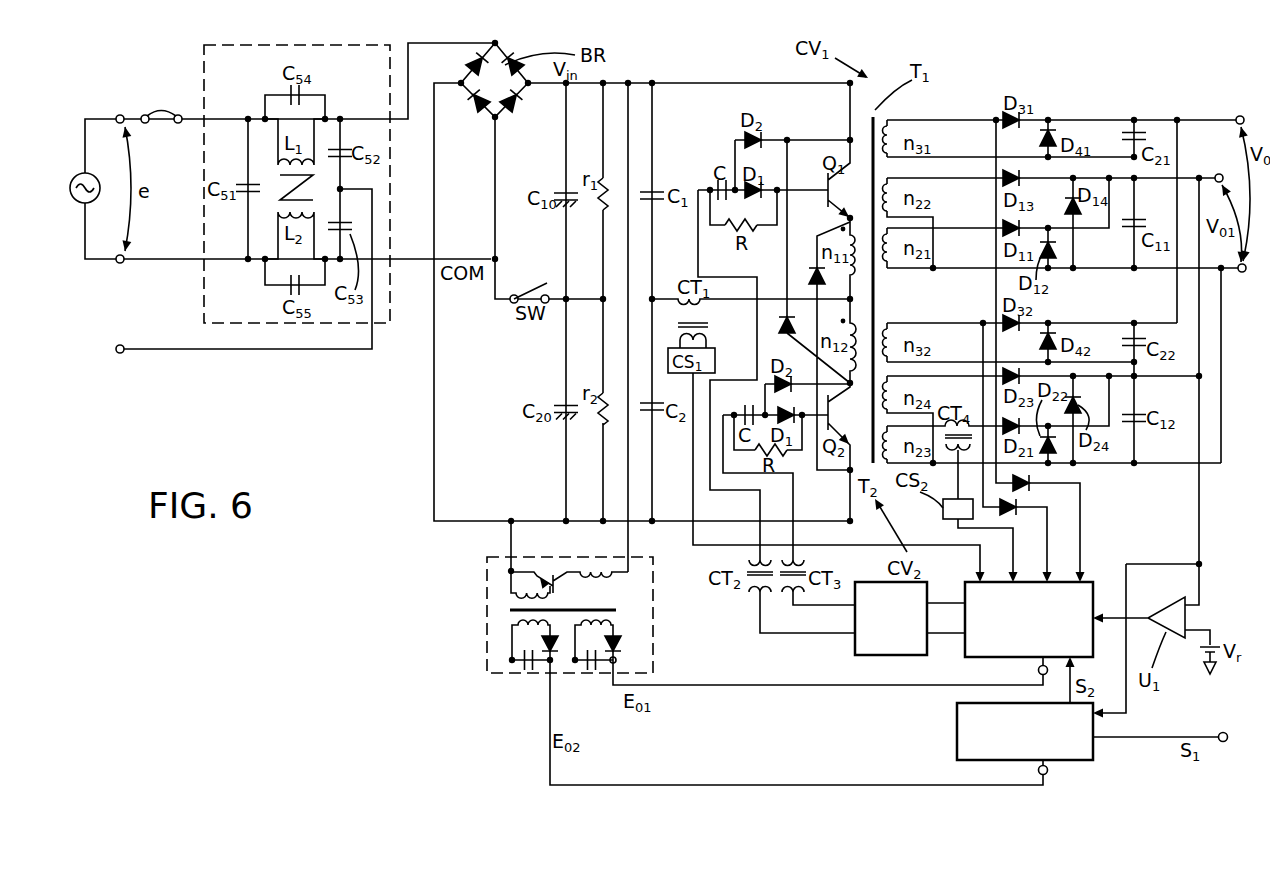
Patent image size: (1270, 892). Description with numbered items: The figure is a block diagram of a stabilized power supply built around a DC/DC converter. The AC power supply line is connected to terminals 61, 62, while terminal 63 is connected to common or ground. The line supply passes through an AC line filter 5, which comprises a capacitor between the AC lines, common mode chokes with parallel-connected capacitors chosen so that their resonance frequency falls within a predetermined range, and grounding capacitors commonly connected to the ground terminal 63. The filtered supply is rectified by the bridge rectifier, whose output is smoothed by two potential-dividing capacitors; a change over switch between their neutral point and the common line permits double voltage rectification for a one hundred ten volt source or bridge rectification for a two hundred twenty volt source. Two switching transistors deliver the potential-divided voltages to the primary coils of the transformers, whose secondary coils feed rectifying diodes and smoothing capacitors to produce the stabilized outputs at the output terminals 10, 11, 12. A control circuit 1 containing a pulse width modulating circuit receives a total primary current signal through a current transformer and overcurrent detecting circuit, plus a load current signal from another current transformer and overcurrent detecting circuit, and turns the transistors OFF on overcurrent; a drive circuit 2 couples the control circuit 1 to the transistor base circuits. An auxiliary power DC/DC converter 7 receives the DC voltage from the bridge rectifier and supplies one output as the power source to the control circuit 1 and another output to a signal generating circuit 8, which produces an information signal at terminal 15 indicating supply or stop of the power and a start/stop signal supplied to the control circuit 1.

The control circuit 1 is at (1093, 597).
The drive circuit 2 is at (855, 650).
The AC line filter 5 is at (204, 303).
The auxiliary power DC/DC converter 7 is at (487, 648).
The signal generating circuit 8 is at (957, 735).
The output common terminal 10 is at (1244, 281).
The output terminal 11 is at (1218, 165).
The output terminal 12 is at (1240, 108).
The terminal 15 is at (1226, 733).
The terminal 61 is at (116, 108).
The terminal 62 is at (116, 271).
The terminal 63 is at (238, 285).